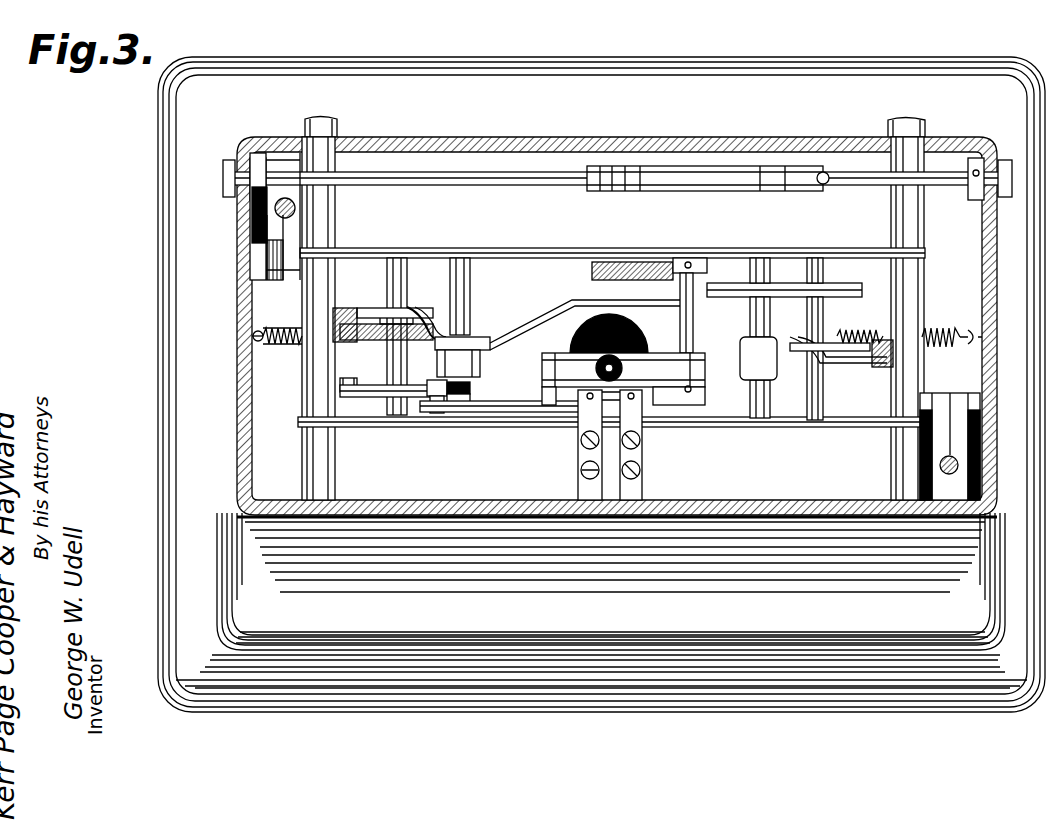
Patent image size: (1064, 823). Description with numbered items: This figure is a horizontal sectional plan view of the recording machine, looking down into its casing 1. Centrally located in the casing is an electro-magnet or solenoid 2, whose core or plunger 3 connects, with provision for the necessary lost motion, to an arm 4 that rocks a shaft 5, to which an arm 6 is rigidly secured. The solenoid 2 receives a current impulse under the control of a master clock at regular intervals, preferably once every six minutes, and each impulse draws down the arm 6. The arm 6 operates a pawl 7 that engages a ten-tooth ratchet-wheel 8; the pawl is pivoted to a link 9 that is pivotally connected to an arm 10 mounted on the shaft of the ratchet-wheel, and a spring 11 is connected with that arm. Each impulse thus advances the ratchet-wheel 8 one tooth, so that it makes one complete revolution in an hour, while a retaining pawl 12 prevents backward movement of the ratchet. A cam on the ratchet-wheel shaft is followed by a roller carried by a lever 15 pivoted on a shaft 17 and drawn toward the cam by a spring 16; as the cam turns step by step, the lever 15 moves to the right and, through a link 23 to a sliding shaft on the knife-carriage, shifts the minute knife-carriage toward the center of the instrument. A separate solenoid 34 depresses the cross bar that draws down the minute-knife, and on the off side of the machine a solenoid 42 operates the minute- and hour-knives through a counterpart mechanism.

The casing 1 is at (997, 300).
The solenoid 2 is at (627, 338).
The core or plunger 3 is at (592, 365).
The arm 4 is at (648, 370).
The shaft 5 is at (695, 333).
The arm 6 is at (474, 404).
The pawl 7 is at (478, 368).
The ratchet-wheel 8 is at (373, 398).
The link 9 is at (432, 397).
The arm 10 is at (435, 413).
The spring 11 is at (458, 405).
The retaining pawl 12 is at (346, 393).
The lever 15 is at (477, 328).
The spring 16 is at (287, 347).
The shaft 17 is at (473, 283).
The link 23 is at (363, 310).
The solenoid 34 is at (1000, 455).
The solenoid 42 is at (238, 225).